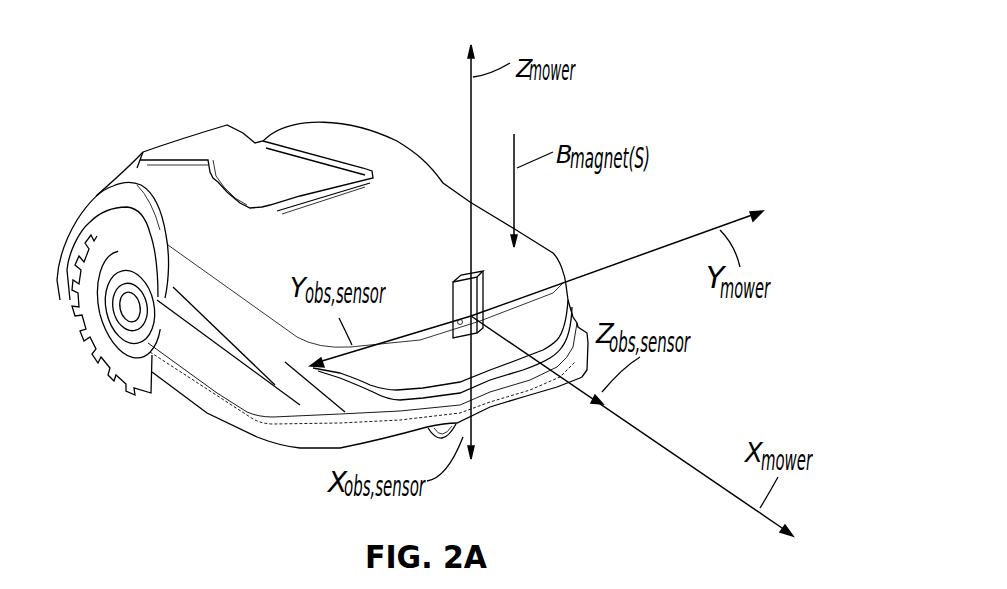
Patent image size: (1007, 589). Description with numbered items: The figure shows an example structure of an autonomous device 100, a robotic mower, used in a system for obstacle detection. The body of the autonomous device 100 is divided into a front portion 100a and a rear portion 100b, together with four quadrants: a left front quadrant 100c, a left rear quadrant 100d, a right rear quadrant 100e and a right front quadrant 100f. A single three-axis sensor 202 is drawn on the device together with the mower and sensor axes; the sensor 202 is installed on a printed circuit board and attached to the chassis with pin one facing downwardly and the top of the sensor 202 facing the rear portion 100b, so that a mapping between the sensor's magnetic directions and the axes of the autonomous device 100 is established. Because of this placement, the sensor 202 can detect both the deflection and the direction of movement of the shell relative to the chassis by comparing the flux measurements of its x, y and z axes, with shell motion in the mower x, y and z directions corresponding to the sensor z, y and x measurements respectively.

The autonomous device 100 is at (633, 83).
The front portion 100a is at (510, 383).
The rear portion 100b is at (257, 141).
The left front quadrant 100c is at (558, 257).
The left rear quadrant 100d is at (363, 143).
The right rear quadrant 100e is at (130, 217).
The right front quadrant 100f is at (275, 385).
The three-axis sensor 202 is at (471, 316).